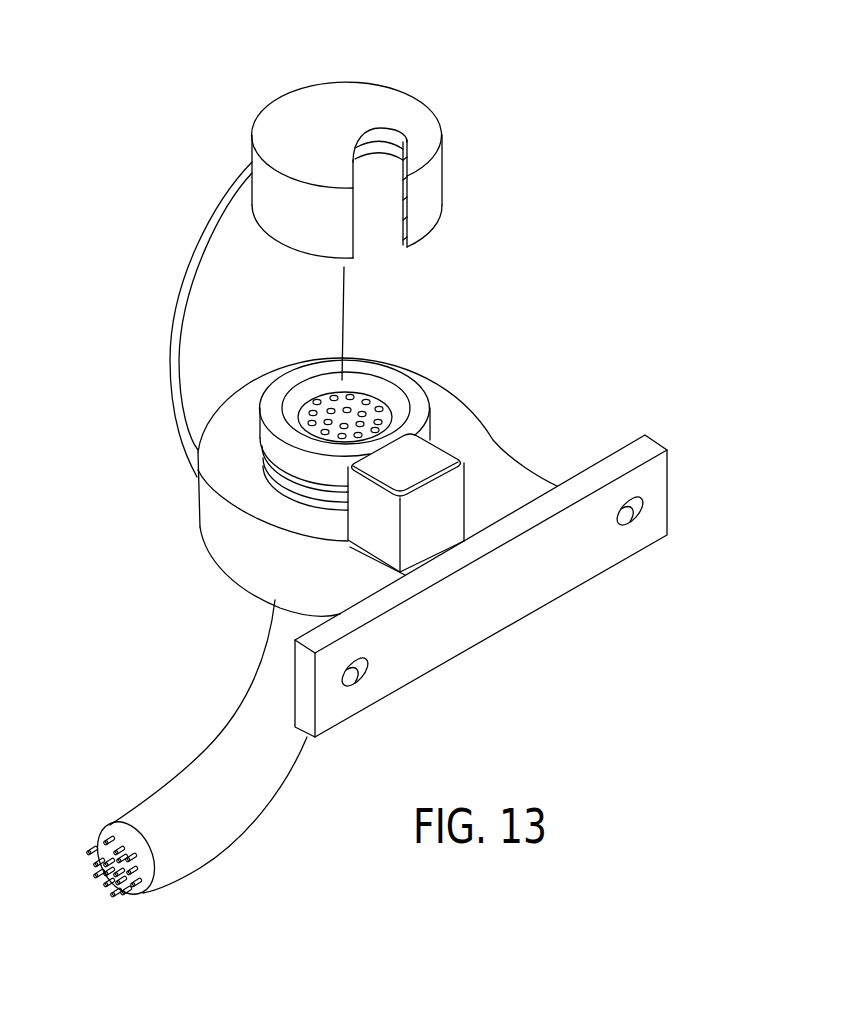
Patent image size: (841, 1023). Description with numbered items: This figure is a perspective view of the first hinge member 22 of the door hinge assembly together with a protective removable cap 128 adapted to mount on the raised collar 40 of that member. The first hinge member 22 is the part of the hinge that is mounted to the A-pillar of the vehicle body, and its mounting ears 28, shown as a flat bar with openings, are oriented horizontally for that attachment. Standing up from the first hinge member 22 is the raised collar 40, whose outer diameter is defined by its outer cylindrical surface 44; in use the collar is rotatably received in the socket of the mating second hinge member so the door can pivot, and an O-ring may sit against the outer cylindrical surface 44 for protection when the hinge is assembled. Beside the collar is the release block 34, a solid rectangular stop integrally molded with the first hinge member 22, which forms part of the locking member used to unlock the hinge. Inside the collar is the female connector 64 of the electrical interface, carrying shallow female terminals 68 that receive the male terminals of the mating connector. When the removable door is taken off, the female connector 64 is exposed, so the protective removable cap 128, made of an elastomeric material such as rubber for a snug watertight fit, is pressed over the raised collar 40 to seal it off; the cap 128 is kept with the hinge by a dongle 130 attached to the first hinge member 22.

The first hinge member 22 is at (467, 435).
The mounting ears 28 is at (557, 568).
The release block 34 is at (430, 538).
The raised collar 40 is at (407, 378).
The outer cylindrical surface 44 is at (303, 463).
The female connector 64 is at (380, 384).
The female terminals 68 is at (317, 393).
The protective removable cap 128 is at (366, 104).
The dongle 130 is at (170, 318).